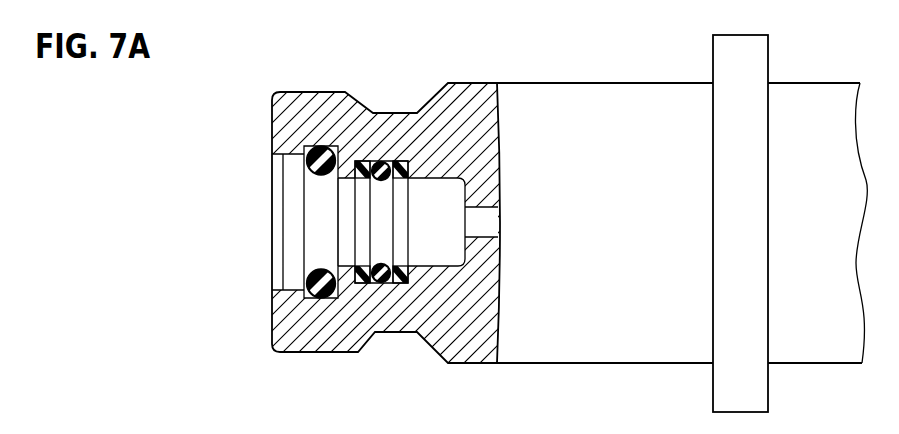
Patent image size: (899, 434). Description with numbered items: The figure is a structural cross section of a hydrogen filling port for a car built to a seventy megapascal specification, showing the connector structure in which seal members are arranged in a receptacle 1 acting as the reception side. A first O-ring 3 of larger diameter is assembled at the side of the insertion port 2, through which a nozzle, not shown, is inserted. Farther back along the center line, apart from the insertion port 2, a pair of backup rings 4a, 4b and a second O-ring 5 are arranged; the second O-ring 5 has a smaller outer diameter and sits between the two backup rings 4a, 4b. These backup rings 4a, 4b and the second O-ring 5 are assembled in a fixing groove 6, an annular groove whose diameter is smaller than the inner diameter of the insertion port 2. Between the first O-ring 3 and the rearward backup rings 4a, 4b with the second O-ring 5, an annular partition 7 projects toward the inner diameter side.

The receptacle 1 is at (569, 73).
The insertion port 2 is at (288, 290).
The first O-ring 3 is at (327, 165).
The backup ring 4a is at (362, 284).
The backup ring 4b is at (402, 284).
The second O-ring 5 is at (380, 170).
The fixing groove 6 is at (384, 284).
The annular partition 7 is at (346, 266).